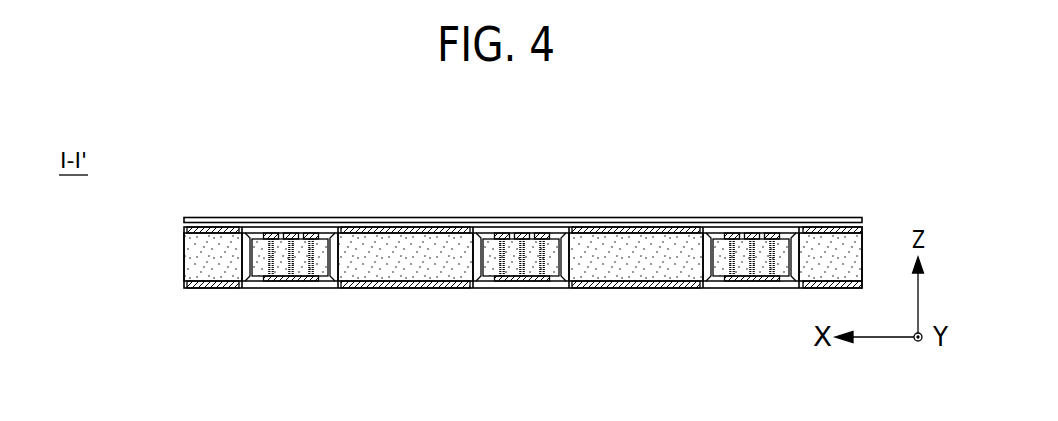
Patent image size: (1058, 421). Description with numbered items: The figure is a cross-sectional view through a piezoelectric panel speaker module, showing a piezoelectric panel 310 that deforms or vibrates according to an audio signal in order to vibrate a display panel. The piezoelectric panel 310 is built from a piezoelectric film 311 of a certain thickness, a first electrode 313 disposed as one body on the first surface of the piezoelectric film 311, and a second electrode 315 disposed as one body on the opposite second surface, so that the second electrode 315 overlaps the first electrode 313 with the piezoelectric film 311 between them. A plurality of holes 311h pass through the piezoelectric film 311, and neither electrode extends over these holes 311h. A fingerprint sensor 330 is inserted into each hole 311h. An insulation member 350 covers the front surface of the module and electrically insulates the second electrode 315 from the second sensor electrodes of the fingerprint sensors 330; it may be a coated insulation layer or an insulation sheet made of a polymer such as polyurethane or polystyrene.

The piezoelectric panel 310 is at (457, 256).
The piezoelectric film 311 is at (193, 257).
The hole 311h is at (243, 255).
The first electrode 313 is at (487, 288).
The second electrode 315 is at (185, 229).
The fingerprint sensor 330 is at (302, 311).
The insulation member 350 is at (255, 221).